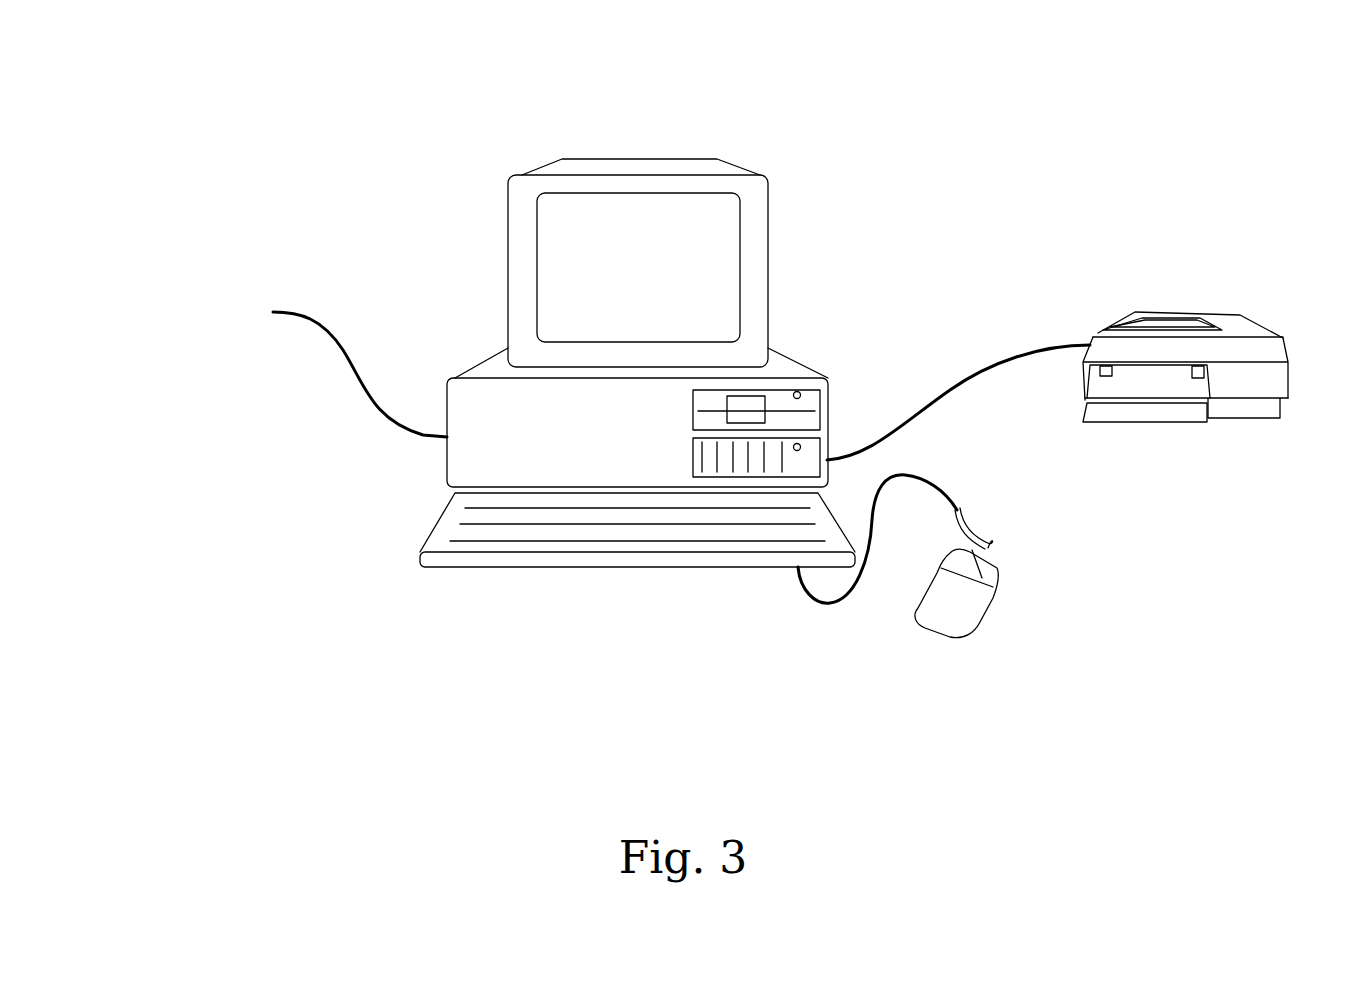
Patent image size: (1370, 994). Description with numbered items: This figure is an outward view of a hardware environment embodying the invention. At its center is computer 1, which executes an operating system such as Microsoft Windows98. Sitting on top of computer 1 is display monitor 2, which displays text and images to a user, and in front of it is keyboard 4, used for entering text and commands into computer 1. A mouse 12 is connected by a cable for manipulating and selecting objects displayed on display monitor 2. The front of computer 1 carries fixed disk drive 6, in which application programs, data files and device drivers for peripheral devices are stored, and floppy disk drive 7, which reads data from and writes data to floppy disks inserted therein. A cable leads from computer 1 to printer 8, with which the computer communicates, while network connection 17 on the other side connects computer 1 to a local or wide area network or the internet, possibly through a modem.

The computer 1 is at (805, 138).
The display monitor 2 is at (512, 285).
The keyboard 4 is at (503, 567).
The fixed disk drive 6 is at (735, 477).
The floppy disk drive 7 is at (817, 415).
The printer 8 is at (1290, 365).
The mouse 12 is at (947, 637).
The network connection 17 is at (390, 427).